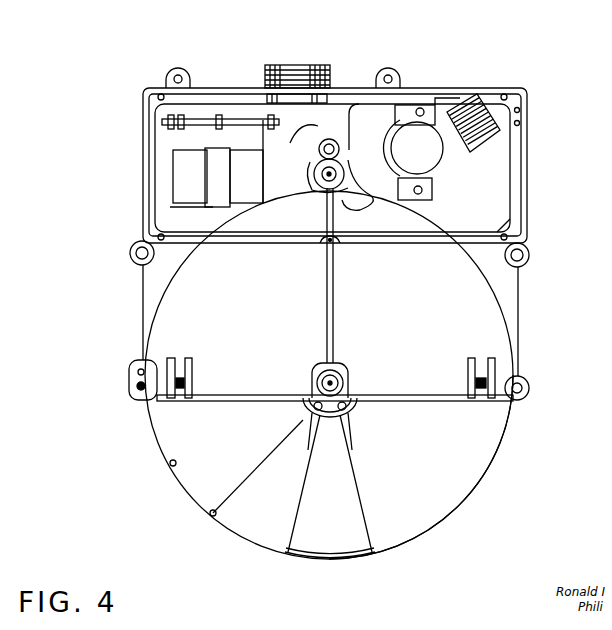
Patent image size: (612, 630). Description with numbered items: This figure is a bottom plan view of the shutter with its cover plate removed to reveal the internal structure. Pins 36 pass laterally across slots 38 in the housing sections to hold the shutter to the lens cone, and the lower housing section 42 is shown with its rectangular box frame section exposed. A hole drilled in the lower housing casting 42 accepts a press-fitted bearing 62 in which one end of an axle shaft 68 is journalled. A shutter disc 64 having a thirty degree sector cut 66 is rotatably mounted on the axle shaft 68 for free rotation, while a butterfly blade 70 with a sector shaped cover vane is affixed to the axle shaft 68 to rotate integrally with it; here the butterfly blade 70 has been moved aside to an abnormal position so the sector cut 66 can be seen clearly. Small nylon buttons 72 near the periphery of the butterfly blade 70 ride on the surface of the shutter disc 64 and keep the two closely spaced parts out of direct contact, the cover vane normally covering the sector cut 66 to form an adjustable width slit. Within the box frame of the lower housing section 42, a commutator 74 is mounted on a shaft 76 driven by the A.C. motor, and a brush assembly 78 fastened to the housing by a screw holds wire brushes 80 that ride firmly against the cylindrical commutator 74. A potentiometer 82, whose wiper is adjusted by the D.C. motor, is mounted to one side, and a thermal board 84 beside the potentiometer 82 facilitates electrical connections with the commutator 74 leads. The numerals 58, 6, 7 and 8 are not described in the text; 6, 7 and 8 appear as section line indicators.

The pins 36 is at (155, 403).
The slots 38 is at (167, 357).
The lower housing section 42 is at (520, 288).
The coil 58 is at (266, 66).
The bearing 62 is at (342, 375).
The shutter disc 64 is at (440, 523).
The sector cut 66 is at (368, 532).
The axle shaft 68 is at (326, 381).
The butterfly blade 70 is at (183, 488).
The nylon buttons 72 is at (210, 517).
The commutator 74 is at (316, 178).
The shaft 76 is at (318, 172).
The brush assembly 78 is at (322, 143).
The wire brushes 80 is at (319, 152).
The potentiometer 82 is at (478, 96).
The thermal board 84 is at (380, 150).
The section line 6- 6 is at (330, 188).
The section line 7- 7 is at (478, 263).
The section line 8- 8 is at (262, 208).